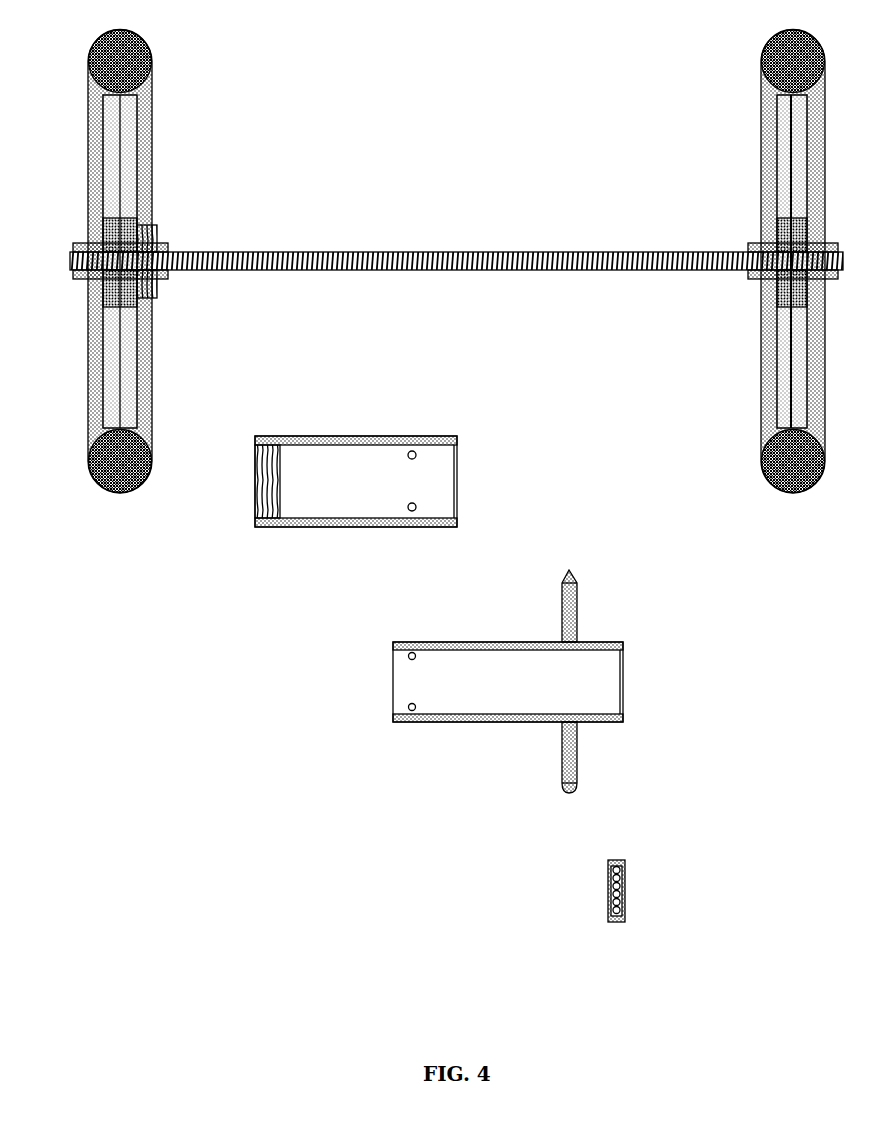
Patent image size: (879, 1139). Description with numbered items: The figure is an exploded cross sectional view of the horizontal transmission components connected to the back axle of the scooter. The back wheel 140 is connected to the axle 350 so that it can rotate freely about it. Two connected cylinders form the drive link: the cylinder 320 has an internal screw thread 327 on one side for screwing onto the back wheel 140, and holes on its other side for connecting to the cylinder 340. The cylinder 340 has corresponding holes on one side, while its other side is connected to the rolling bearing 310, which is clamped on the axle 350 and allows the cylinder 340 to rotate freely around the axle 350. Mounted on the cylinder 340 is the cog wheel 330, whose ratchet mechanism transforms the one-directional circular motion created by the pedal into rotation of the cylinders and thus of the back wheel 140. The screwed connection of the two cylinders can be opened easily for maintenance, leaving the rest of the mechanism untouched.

The back wheel 140 is at (95, 490).
The axle 350 is at (503, 245).
The cylinder 320 is at (353, 483).
The internal screw thread 327 is at (255, 518).
The cog wheel 330 is at (580, 592).
The cylinder 340 is at (437, 722).
The rolling bearing 310 is at (630, 893).